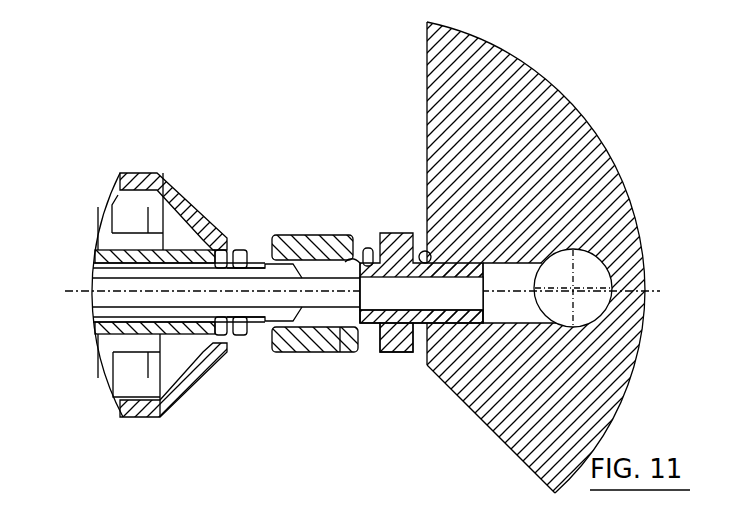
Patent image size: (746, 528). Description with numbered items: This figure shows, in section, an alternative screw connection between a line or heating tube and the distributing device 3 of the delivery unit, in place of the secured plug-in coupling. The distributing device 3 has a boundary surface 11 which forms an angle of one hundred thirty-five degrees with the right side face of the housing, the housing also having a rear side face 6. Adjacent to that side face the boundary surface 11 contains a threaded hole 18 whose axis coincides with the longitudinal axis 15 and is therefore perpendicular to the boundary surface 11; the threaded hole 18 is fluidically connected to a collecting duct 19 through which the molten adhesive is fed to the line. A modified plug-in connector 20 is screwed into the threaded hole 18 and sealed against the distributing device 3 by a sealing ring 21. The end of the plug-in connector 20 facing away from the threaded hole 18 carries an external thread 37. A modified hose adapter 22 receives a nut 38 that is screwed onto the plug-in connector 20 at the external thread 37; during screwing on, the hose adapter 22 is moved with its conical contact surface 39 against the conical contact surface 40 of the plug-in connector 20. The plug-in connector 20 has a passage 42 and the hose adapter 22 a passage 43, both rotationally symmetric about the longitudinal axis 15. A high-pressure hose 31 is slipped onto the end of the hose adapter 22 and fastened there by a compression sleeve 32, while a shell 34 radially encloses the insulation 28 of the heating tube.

The boundary surface 11 is at (425, 110).
The rear side face 6 is at (485, 420).
The collecting duct 19 is at (596, 272).
The distributing device 3 is at (402, 178).
The longitudinal axis 15 is at (500, 296).
The plug-in connector 20 is at (393, 340).
The sealing ring 21 is at (417, 348).
The threaded hole 18 is at (428, 250).
The nut 38 is at (290, 240).
The conical contact surface 39 is at (318, 340).
The conical contact surface 40 is at (338, 352).
The external thread 37 is at (343, 262).
The passage 42 is at (372, 276).
The passage 43 is at (238, 278).
The hose adapter 22 is at (265, 340).
The high-pressure hose 31 is at (95, 265).
The compression sleeve 32 is at (98, 325).
The shell 34 is at (175, 192).
The insulation 28 is at (120, 382).